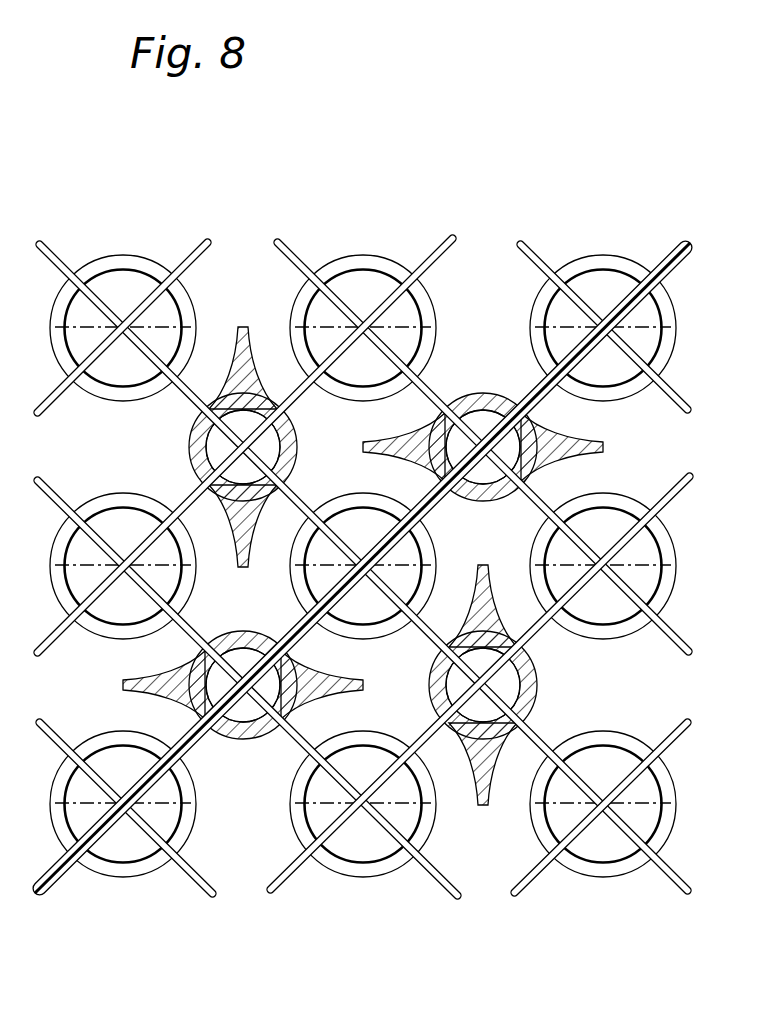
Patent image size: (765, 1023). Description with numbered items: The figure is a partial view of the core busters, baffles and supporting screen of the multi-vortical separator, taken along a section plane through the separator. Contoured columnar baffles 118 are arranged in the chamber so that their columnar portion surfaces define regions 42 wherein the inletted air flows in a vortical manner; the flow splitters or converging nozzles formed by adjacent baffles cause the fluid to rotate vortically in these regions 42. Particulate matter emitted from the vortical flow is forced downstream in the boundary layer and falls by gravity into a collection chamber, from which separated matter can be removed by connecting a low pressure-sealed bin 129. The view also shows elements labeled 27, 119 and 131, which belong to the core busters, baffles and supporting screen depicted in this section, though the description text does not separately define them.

The strand 27 is at (543, 492).
The region 42 is at (370, 468).
The contoured columnar baffle 118 is at (537, 667).
The hub opening 119 is at (240, 613).
The low pressure-sealed bin 129 is at (365, 638).
The inner ring 131 is at (451, 557).